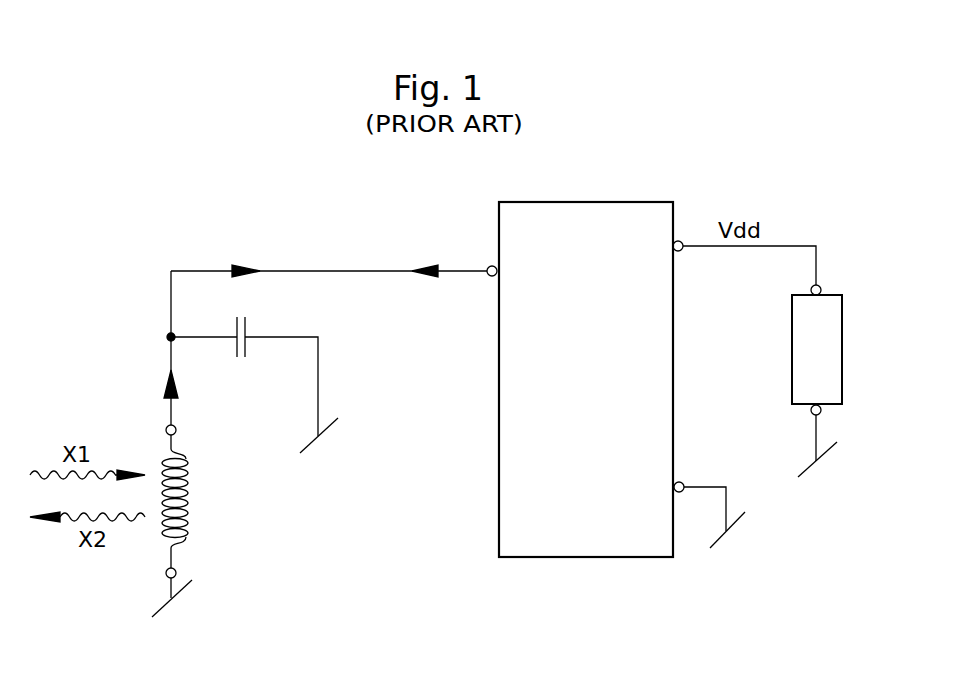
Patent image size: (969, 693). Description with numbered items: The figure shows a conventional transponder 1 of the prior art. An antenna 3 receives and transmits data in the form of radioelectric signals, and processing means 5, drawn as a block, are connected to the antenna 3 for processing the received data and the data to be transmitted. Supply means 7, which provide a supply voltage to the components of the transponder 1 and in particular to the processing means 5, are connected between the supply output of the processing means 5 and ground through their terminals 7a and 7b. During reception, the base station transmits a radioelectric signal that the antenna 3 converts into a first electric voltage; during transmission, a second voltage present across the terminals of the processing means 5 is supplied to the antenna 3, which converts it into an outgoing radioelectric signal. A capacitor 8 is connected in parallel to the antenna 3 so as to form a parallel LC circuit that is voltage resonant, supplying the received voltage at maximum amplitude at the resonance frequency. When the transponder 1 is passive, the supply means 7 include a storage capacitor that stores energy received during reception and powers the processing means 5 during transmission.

The transponder 1 is at (356, 558).
The antenna 3 is at (189, 499).
The processing means 5 is at (527, 537).
The supply means 7 is at (796, 353).
The first terminal of load 7a is at (821, 287).
The second terminal of load 7b is at (820, 414).
The capacitor 8 is at (246, 330).